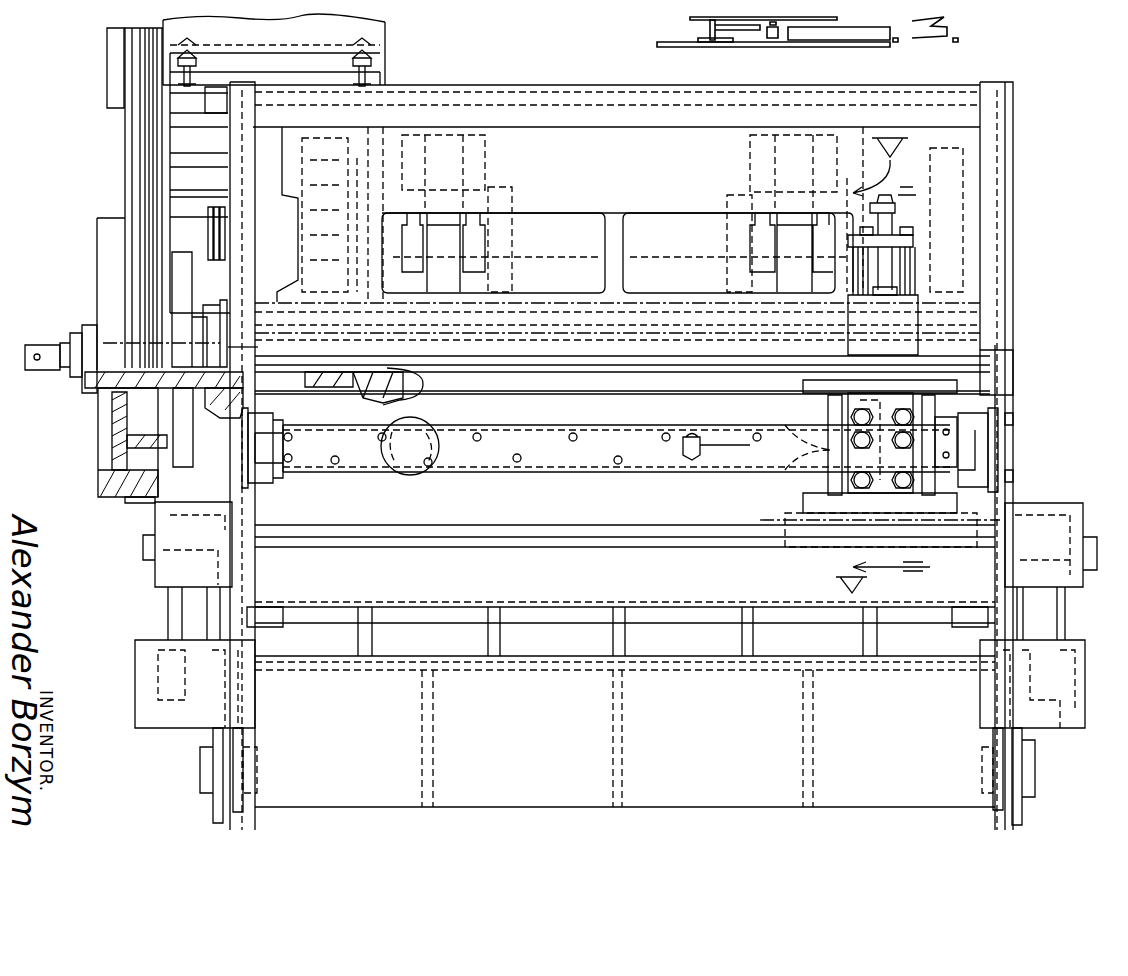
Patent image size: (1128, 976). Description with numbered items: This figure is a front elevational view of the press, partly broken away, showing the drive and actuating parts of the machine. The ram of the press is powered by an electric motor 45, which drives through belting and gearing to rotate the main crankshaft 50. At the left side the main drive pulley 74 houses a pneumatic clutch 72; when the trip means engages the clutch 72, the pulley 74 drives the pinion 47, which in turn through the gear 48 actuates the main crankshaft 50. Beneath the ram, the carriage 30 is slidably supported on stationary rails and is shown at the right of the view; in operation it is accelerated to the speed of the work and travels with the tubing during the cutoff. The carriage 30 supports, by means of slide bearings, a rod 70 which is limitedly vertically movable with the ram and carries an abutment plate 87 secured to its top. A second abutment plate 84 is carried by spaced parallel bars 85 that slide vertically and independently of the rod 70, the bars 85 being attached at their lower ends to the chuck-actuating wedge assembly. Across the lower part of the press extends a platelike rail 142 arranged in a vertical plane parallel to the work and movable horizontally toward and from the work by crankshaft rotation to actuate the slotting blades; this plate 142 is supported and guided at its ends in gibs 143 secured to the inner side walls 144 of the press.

The electric motor 45 is at (383, 32).
The gear 48 is at (328, 132).
The crankshaft 50 is at (563, 208).
The abutment plate 87 is at (905, 207).
The rod 70 is at (890, 226).
The abutment plate 84 is at (915, 246).
The spaced parallel bars 85 is at (903, 263).
The pneumatic clutch 72 is at (71, 331).
The main drive pulley 74 is at (100, 480).
The pinion 47 is at (337, 393).
The gibs 143 is at (257, 488).
The platelike rail 142 is at (598, 458).
The carriage 30 is at (790, 502).
The inner side walls 144 is at (1005, 363).